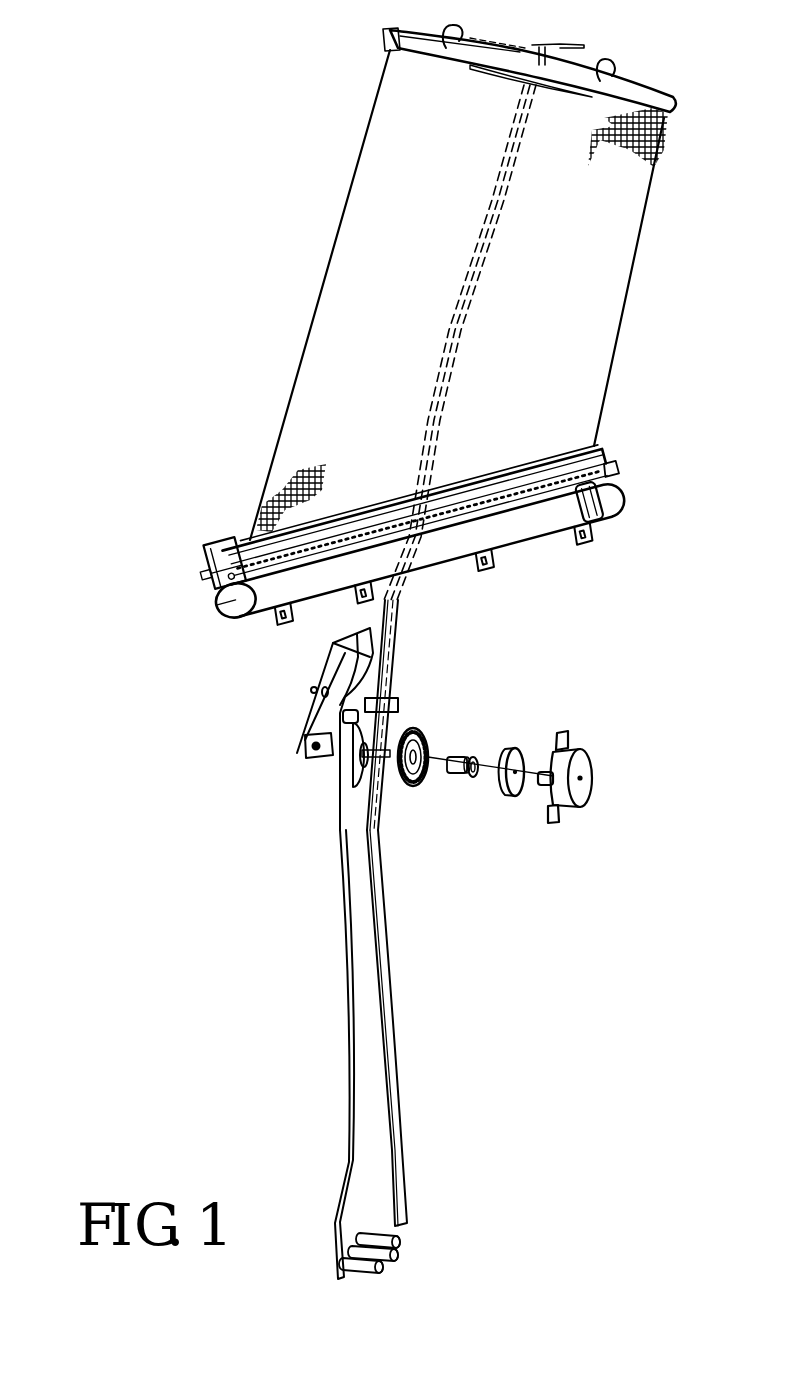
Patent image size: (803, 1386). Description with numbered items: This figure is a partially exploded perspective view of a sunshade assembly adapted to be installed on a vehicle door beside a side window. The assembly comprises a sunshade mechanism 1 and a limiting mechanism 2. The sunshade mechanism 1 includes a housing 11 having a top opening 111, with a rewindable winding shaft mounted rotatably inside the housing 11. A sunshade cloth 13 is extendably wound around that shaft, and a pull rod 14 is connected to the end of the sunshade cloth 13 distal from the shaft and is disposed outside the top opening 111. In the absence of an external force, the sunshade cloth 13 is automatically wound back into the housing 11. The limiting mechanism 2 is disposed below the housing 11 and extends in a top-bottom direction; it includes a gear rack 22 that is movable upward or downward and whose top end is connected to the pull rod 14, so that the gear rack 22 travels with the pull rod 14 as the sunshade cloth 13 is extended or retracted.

The sunshade mechanism 1 is at (316, 205).
The housing 11 is at (269, 605).
The top opening 111 is at (242, 538).
The sunshade cloth 13 is at (340, 292).
The pull rod 14 is at (630, 82).
The limiting mechanism 2 is at (311, 890).
The gear rack 22 is at (433, 403).